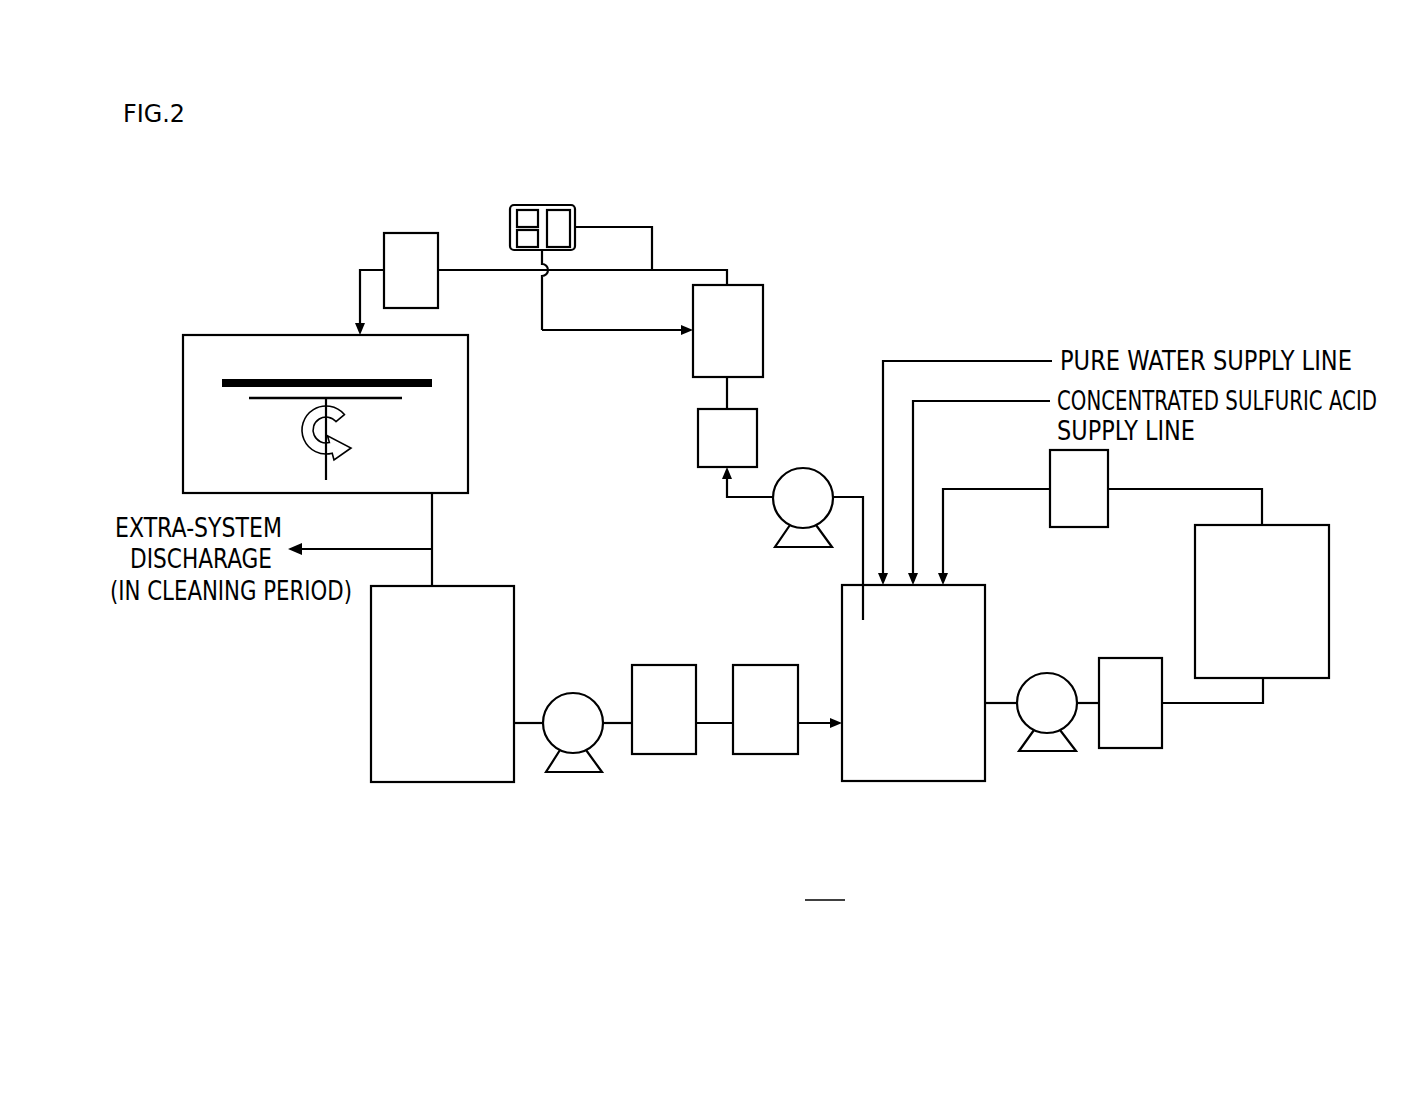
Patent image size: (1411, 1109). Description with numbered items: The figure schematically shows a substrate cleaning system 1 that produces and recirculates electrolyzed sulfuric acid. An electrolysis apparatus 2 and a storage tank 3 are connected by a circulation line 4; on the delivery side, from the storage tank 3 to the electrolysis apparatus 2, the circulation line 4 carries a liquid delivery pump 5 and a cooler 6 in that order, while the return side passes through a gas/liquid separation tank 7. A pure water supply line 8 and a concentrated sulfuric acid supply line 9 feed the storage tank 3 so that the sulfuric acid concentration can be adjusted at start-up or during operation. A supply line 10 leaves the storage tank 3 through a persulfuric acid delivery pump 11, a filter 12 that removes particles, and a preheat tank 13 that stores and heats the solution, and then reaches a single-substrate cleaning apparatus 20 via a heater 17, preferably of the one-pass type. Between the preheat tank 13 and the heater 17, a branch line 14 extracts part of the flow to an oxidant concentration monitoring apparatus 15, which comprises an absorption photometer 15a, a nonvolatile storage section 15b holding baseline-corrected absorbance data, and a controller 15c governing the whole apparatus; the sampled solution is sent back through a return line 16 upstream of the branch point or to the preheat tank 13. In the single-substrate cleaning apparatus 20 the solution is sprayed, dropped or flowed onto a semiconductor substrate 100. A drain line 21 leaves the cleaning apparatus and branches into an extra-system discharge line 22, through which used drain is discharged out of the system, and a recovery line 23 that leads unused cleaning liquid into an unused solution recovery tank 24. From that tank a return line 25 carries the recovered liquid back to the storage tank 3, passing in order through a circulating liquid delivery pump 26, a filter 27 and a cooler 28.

The substrate cleaning system 1 is at (825, 885).
The electrolysis apparatus 2 is at (1332, 605).
The storage tank 3 is at (913, 783).
The circulation line 4 is at (1228, 488).
The liquid delivery pump 5 is at (1049, 753).
The cooler 6 is at (1133, 750).
The gas/liquid separation tank 7 is at (1108, 460).
The pure water supply line 8 is at (968, 360).
The concentrated sulfuric acid supply line 9 is at (983, 403).
The supply line 10 is at (846, 495).
The persulfuric acid delivery pump 11 is at (806, 467).
The filter 12 is at (757, 420).
The preheat tank 13 is at (763, 308).
The branch line 14 is at (652, 252).
The oxidant concentration monitoring apparatus 15 is at (510, 224).
The absorption photometer 15a is at (560, 207).
The nonvolatile storage section 15b is at (522, 207).
The controller 15c is at (528, 252).
The return line 16 is at (620, 332).
The heater 17 is at (411, 233).
The single-substrate cleaning apparatus 20 is at (183, 412).
The drain line 21 is at (434, 518).
The extra-system discharge line 22 is at (368, 548).
The recovery line 23 is at (434, 573).
The unused solution recovery tank 24 is at (371, 682).
The return line 25 is at (530, 725).
The circulating liquid delivery pump 26 is at (573, 693).
The filter 27 is at (663, 663).
The cooler 28 is at (765, 663).
The semiconductor substrate 100 is at (240, 378).